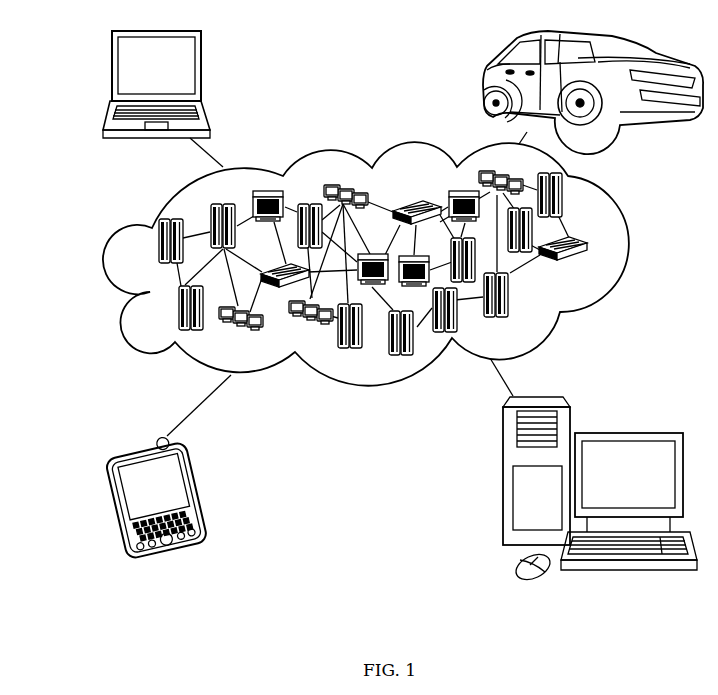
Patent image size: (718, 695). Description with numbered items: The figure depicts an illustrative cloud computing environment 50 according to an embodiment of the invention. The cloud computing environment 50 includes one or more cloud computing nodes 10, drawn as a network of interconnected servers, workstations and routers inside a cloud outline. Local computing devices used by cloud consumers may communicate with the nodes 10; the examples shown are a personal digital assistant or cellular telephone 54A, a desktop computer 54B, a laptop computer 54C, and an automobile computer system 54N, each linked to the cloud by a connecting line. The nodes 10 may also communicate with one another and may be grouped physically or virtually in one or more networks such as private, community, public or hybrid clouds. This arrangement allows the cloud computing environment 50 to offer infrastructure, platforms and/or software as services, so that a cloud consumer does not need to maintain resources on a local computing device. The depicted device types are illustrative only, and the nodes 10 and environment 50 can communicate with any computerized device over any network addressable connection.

The cloud computing nodes 10 is at (594, 268).
The cloud computing environment 50 is at (630, 252).
The personal digital assistant or cellular telephone 54A is at (196, 497).
The desktop computer 54B is at (626, 433).
The laptop computer 54C is at (202, 70).
The automobile computer system 54N is at (484, 80).